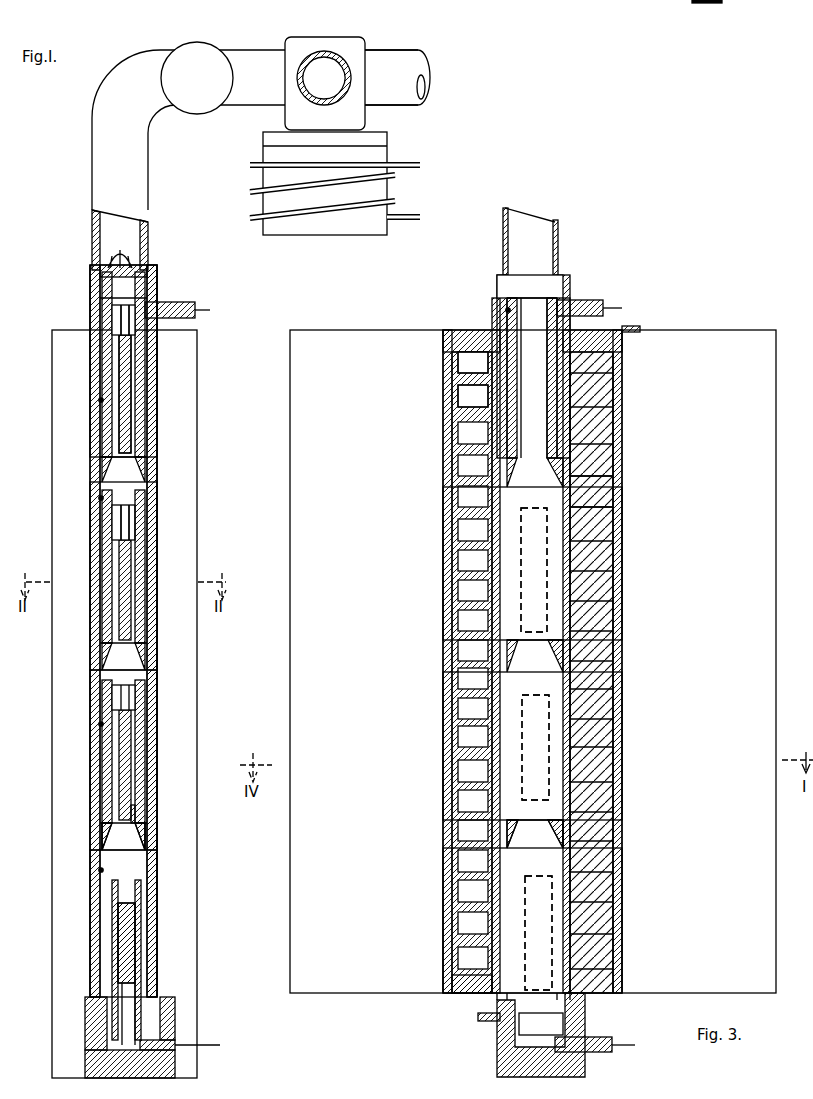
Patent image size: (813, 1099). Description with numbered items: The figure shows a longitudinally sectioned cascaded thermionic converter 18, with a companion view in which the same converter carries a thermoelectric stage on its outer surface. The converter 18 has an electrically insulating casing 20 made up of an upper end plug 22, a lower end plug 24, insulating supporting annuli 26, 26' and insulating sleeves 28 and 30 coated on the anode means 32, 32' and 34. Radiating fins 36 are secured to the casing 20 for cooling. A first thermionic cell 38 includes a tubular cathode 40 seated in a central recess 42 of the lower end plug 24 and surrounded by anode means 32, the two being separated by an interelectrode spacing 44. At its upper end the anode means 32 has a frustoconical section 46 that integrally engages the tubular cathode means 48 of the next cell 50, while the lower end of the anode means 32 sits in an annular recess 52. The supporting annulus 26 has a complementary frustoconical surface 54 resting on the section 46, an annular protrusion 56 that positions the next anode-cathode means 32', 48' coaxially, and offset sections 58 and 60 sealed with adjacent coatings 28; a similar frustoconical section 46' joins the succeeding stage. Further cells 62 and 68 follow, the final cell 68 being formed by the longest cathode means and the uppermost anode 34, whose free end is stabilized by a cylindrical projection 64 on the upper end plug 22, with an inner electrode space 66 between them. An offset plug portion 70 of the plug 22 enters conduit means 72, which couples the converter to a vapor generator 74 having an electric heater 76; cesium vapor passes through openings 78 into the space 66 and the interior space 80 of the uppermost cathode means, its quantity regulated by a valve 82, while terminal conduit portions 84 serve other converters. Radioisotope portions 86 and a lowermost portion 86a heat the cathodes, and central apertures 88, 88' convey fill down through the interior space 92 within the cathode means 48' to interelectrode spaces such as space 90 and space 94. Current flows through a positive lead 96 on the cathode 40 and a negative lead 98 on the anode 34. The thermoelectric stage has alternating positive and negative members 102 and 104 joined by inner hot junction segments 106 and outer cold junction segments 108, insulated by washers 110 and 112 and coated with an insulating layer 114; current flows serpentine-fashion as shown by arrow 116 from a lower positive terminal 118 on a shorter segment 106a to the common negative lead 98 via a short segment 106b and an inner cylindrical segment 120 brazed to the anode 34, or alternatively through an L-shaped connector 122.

In FIG. 1, the thermionic converter 18 is at (220, 293).
In FIG. 3, the thermionic converter 18 is at (620, 284).
In FIG. 1, the electrically insulating casing 20 is at (98, 690).
In FIG. 3, the electrically insulating casing 20 is at (570, 593).
In FIG. 1, the upper end plug 22 is at (152, 280).
In FIG. 1, the lower end plug 24 is at (92, 1078).
In FIG. 3, the lower end plug 24 is at (497, 1068).
In FIG. 1, the insulating supporting annulus 26 is at (164, 838).
In FIG. 3, the insulating supporting annulus 26 is at (535, 834).
In FIG. 1, the supporting annulus 26' is at (141, 642).
In FIG. 3, the supporting annulus 26' is at (535, 656).
In FIG. 1, the insulating sleeve 28 is at (152, 530).
In FIG. 3, the insulating sleeve 28 is at (570, 530).
In FIG. 1, the insulating sleeve 30 is at (96, 392).
In FIG. 1, the anode means 32 is at (81, 870).
In FIG. 3, the anode means 32 is at (526, 933).
In FIG. 1, the anode means 32' is at (79, 719).
In FIG. 3, the anode means 32' is at (524, 747).
In FIG. 1, the uppermost anode 34 is at (98, 400).
In FIG. 3, the uppermost anode 34 is at (504, 310).
In FIG. 1, the radiating fin 36 is at (52, 425).
In FIG. 1, the first thermionic cell 38 is at (76, 916).
In FIG. 3, the first thermionic cell 38 is at (570, 890).
In FIG. 1, the tubular cathode 40 is at (136, 967).
In FIG. 3, the tubular cathode 40 is at (552, 878).
In FIG. 1, the central recess 42 is at (120, 1046).
In FIG. 1, the interelectrode spacing 44 is at (110, 902).
In FIG. 1, the frustoconical section 46 is at (85, 833).
In FIG. 3, the frustoconical section 46 is at (464, 838).
In FIG. 1, the frustoconical section 46' is at (84, 651).
In FIG. 1, the tubular cathode means 48 is at (95, 723).
In FIG. 1, the cathode means 48' is at (92, 530).
In FIG. 3, the cathode means 48' is at (534, 737).
In FIG. 1, the thermionic cell 50 is at (76, 699).
In FIG. 3, the thermionic cell 50 is at (570, 710).
In FIG. 1, the annular recess 52 is at (85, 1002).
In FIG. 1, the frustoconical surface 54 is at (150, 852).
In FIG. 3, the frustoconical surface 54 is at (570, 838).
In FIG. 1, the annular protrusion 56 is at (148, 832).
In FIG. 1, the upper offset section 58 is at (145, 826).
In FIG. 3, the upper offset section 58 is at (545, 818).
In FIG. 1, the lower offset section 60 is at (100, 842).
In FIG. 3, the lower offset section 60 is at (572, 850).
In FIG. 1, the thermionic cell 62 is at (76, 634).
In FIG. 3, the thermionic cell 62 is at (570, 559).
In FIG. 1, the cylindrical projection 64 is at (140, 342).
In FIG. 1, the inner electrode space 66 is at (146, 360).
In FIG. 3, the inner electrode space 66 is at (551, 302).
In FIG. 1, the final thermionic cell 68 is at (76, 354).
In FIG. 3, the final thermionic cell 68 is at (492, 416).
In FIG. 1, the offset plug portion 70 is at (98, 272).
In FIG. 3, the offset plug portion 70 is at (497, 286).
In FIG. 1, the conduit means 72 is at (92, 236).
In FIG. 3, the conduit means 72 is at (503, 264).
In FIG. 1, the vapor generator 74 is at (342, 37).
In FIG. 1, the electric heater 76 is at (400, 164).
In FIG. 1, the opening 78 is at (120, 248).
In FIG. 1, the interior space 80 is at (118, 328).
In FIG. 1, the valve 82 is at (208, 46).
In FIG. 1, the terminal conduit portion 84 is at (398, 50).
In FIG. 1, the radioisotope portion 86 is at (128, 398).
In FIG. 1, the lowermost radioisotopic portion 86a is at (140, 912).
In FIG. 1, the central aperture 88 is at (143, 751).
In FIG. 1, the central aperture 88' is at (153, 394).
In FIG. 1, the interelectrode space 90 is at (100, 522).
In FIG. 1, the window 92 is at (126, 518).
In FIG. 1, the interelectrode space 94 is at (148, 804).
In FIG. 1, the positive lead 96 is at (200, 1044).
In FIG. 3, the positive lead 96 is at (612, 1044).
In FIG. 1, the negative lead 98 is at (203, 318).
In FIG. 3, the negative lead 98 is at (605, 310).
In FIG. 3, the positive thermoelectric member 102 is at (458, 398).
In FIG. 3, the negative thermoelectric member 104 is at (458, 365).
In FIG. 3, the inner cylindrical segment 106 is at (600, 410).
In FIG. 3, the shorter inner segment 106a is at (475, 993).
In FIG. 3, the short inner segment 106b is at (585, 345).
In FIG. 3, the outer cylindrical segment 108 is at (596, 442).
In FIG. 3, the insulating washer 110 is at (600, 430).
In FIG. 3, the insulating washer 112 is at (604, 455).
In FIG. 3, the insulating layer 114 is at (622, 502).
In FIG. 3, the arrow 116 is at (590, 470).
In FIG. 3, the lower terminal 118 is at (485, 1022).
In FIG. 3, the cylindrical segment 120 is at (505, 335).
In FIG. 3, the L-shaped connector 122 is at (640, 328).